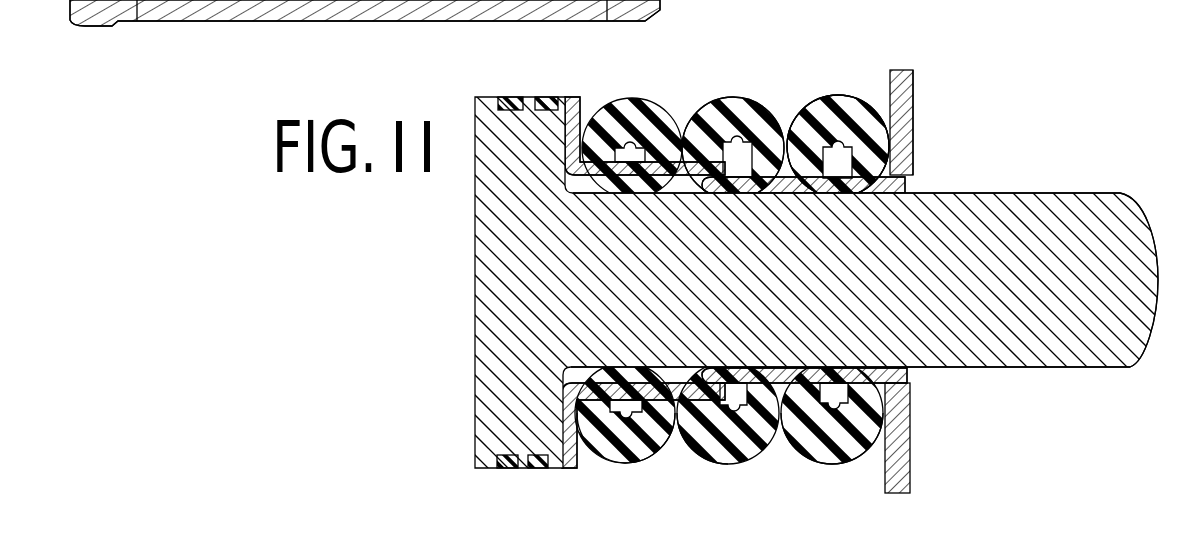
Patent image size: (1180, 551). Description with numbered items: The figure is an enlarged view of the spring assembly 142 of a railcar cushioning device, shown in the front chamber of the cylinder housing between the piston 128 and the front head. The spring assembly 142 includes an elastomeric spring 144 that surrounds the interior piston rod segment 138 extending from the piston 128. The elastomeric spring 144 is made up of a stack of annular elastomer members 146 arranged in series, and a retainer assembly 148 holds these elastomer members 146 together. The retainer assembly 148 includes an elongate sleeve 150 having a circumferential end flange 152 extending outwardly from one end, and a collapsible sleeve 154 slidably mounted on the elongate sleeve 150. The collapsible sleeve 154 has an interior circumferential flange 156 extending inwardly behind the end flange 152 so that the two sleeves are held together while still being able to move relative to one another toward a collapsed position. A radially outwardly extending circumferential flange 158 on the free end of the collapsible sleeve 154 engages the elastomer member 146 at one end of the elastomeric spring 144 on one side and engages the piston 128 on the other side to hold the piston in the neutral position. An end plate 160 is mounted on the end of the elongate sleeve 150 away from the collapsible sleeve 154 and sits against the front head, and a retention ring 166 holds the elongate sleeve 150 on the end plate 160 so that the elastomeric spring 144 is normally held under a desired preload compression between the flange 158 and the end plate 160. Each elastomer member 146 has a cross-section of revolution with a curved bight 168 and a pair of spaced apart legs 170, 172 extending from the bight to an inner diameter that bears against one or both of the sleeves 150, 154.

The piston 128 is at (475, 290).
The interior piston rod segment 138 is at (1088, 366).
The spring assembly 142 is at (505, 16).
The elastomeric spring 144 is at (838, 97).
The annular elastomer members 146 is at (632, 98).
The retainer assembly 148 is at (902, 70).
The elongate sleeve 150 is at (862, 455).
The circumferential end flange 152 is at (673, 445).
The collapsible sleeve 154 is at (593, 447).
The interior circumferential flange 156 is at (742, 458).
The radially outwardly extending circumferential flange 158 is at (592, 98).
The end plate 160 is at (915, 90).
The retention ring 166 is at (907, 178).
The curved bight 168 is at (738, 100).
The leg 170 is at (725, 148).
The leg 172 is at (760, 143).